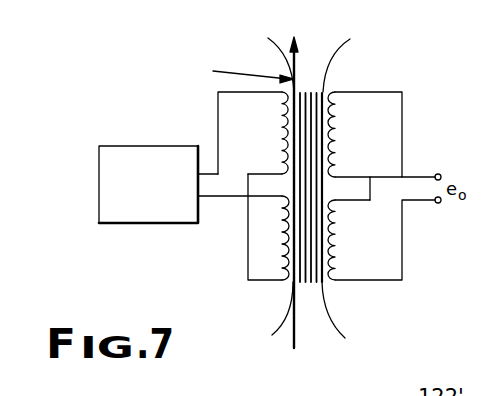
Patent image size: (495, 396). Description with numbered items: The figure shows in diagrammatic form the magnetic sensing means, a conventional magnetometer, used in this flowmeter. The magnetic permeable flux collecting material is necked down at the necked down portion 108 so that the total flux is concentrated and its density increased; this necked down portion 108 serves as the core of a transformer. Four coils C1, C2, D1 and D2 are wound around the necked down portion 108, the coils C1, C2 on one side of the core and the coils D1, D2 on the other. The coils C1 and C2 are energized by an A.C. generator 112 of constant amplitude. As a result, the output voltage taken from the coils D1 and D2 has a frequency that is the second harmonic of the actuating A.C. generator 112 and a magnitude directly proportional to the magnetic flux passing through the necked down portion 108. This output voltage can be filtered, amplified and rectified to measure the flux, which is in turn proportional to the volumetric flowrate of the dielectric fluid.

The necked down portion 108 is at (325, 290).
The A.C. generator 112 is at (143, 223).
The coil C1 is at (253, 133).
The coil C2 is at (268, 227).
The coil D1 is at (384, 146).
The coil D2 is at (384, 238).